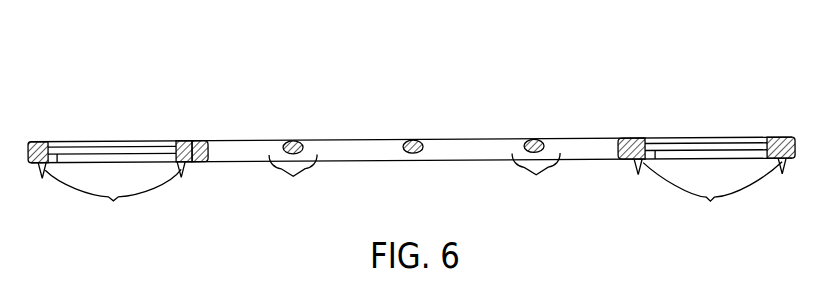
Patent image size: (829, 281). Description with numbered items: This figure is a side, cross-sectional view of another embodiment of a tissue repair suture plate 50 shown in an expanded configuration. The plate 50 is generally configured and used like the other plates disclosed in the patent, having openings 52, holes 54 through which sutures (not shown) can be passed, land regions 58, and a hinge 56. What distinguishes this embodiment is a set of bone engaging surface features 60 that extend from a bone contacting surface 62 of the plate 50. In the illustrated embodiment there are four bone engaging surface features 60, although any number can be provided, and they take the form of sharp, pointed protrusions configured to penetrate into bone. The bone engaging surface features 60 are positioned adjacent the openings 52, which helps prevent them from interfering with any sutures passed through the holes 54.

The plate 50 is at (648, 73).
The openings 52 is at (117, 137).
The holes 54 is at (414, 177).
The hinge 56 is at (195, 166).
The land regions 58 is at (291, 140).
The bone engaging surface features 60 is at (412, 190).
The bone contacting surface 62 is at (626, 160).